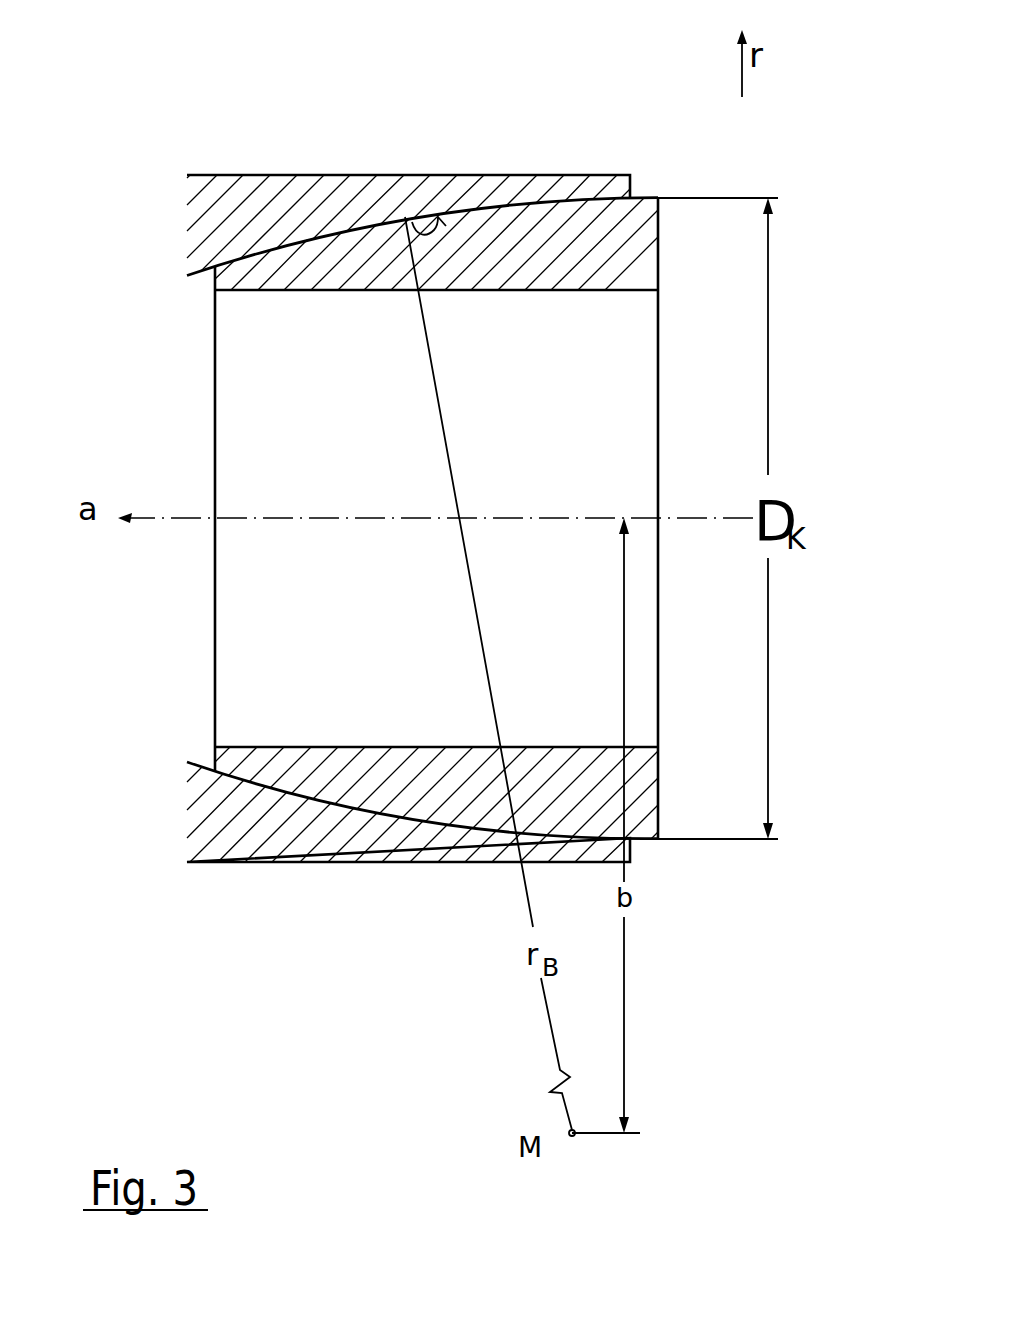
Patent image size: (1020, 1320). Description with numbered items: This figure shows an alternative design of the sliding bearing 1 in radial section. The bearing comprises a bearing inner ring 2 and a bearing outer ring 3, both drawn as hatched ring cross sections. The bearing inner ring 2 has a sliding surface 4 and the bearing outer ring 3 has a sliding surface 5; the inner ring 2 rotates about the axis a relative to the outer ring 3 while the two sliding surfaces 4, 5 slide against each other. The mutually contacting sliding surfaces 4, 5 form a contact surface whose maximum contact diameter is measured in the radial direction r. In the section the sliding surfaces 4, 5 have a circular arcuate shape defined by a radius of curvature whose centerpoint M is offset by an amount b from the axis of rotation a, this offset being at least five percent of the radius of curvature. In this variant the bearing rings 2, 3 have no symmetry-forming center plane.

The spherical plain bearing 1 is at (218, 125).
The bearing inner ring 2 is at (547, 228).
The bearing outer ring 3 is at (457, 185).
The sliding surface 4 is at (590, 198).
The sliding surface 5 is at (412, 222).